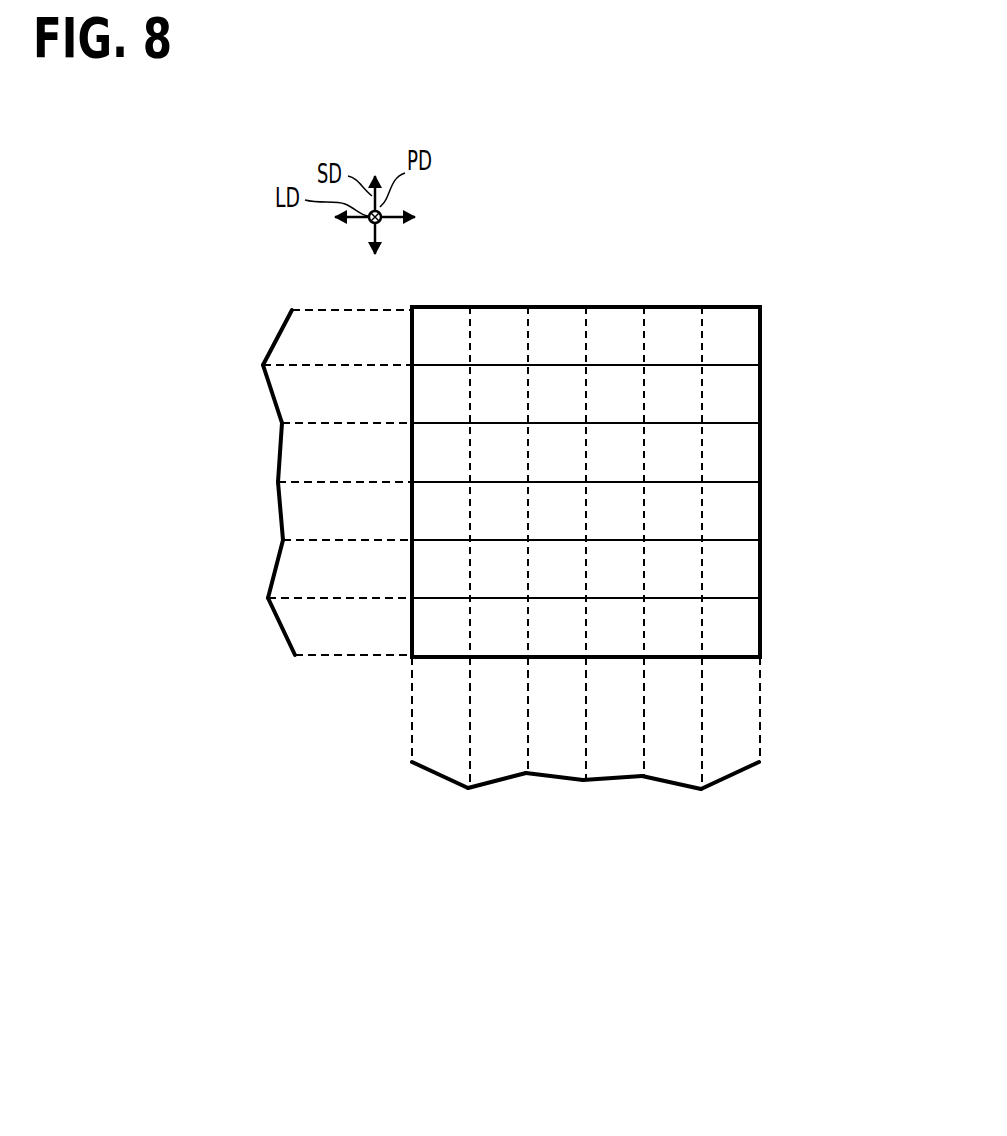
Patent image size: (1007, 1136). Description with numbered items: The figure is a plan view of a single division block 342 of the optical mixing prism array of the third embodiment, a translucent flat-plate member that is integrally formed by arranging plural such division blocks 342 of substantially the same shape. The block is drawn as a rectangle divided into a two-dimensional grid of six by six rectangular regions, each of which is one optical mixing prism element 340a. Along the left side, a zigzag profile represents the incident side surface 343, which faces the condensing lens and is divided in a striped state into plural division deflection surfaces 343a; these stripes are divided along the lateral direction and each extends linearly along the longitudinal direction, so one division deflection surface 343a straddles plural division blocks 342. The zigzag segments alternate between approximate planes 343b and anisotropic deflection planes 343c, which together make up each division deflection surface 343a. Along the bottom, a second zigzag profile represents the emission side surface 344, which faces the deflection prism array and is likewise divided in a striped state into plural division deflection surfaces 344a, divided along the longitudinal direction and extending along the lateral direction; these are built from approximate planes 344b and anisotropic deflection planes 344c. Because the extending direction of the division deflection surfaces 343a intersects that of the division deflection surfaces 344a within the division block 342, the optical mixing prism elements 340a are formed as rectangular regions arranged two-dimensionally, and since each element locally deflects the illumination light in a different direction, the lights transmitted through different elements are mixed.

The optical mixing prism element 340a is at (754, 353).
The division block 342 is at (752, 296).
The incident side surface 343 is at (254, 536).
The division deflection surface 343a is at (196, 482).
The approximate plane 343b is at (280, 333).
The anisotropic deflection plane 343c is at (276, 403).
The emission side surface 344 is at (570, 805).
The division deflection surface 344a is at (570, 857).
The approximate plane 344b is at (435, 774).
The anisotropic deflection plane 344c is at (498, 782).